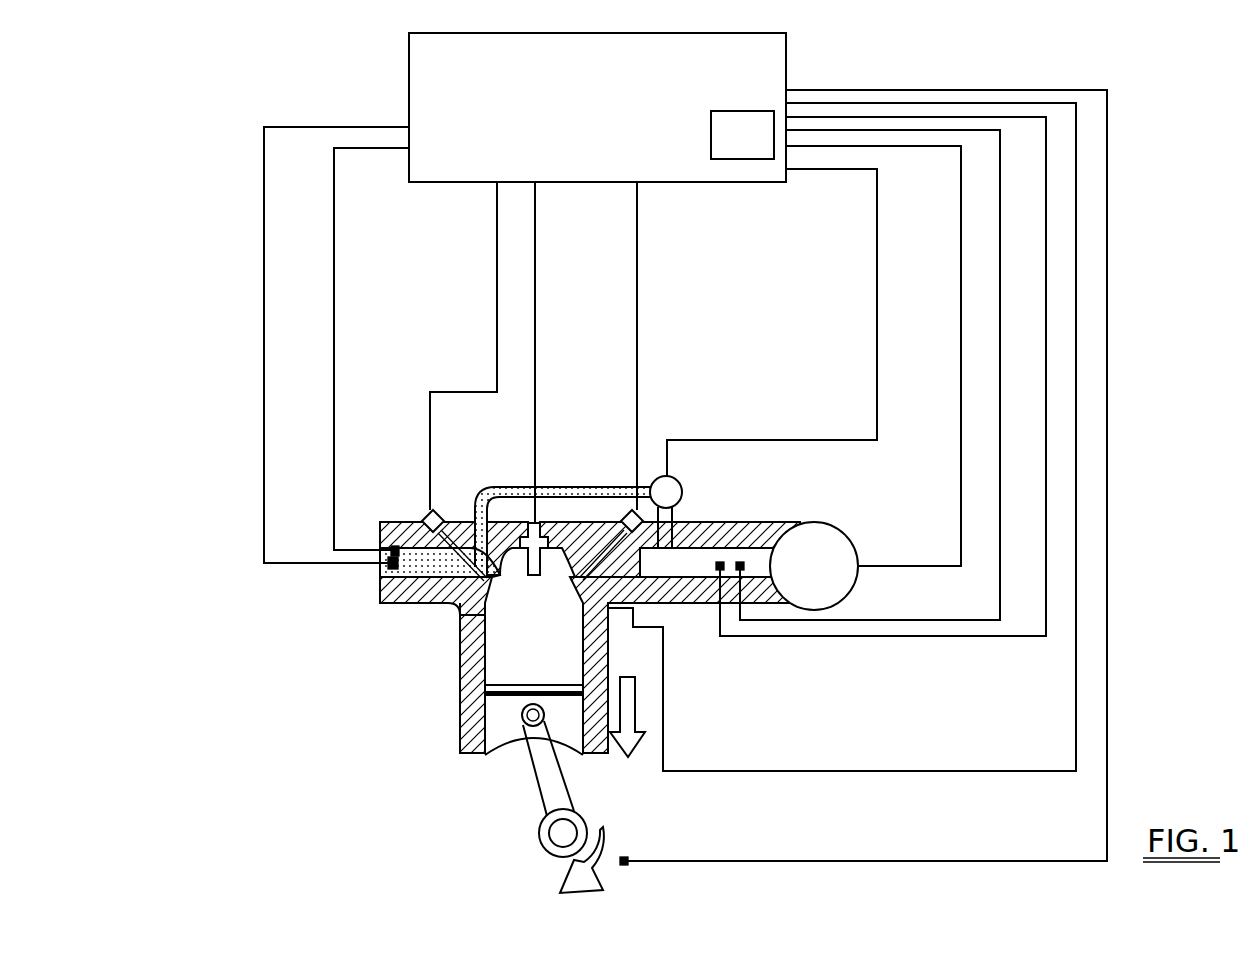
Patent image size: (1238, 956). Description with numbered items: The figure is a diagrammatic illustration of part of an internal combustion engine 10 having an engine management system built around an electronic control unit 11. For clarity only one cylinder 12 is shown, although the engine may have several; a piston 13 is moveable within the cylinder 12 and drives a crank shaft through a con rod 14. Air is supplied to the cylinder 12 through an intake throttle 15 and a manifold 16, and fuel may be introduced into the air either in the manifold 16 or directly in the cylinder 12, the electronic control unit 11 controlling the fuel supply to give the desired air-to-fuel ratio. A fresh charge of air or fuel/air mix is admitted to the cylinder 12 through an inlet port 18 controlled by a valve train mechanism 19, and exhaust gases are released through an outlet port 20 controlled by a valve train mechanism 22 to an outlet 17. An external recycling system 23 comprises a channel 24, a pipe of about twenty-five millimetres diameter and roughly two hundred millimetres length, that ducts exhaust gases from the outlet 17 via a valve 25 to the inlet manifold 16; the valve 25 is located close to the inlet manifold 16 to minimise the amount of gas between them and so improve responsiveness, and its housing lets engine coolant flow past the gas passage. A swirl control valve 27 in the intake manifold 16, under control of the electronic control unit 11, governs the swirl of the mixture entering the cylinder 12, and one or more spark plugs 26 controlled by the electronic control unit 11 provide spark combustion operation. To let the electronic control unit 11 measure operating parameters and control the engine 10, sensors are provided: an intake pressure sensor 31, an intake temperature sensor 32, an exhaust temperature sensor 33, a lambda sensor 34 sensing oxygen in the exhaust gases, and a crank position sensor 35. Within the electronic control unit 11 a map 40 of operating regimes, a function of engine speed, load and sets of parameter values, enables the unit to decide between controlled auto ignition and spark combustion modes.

The engine 10 is at (194, 517).
The electronic control unit 11 is at (772, 58).
The map of operating regimes 40 is at (762, 122).
The cylinder 12 is at (477, 695).
The piston 13 is at (503, 755).
The con rod 14 is at (555, 777).
The intake throttle 15 is at (834, 580).
The manifold 16 is at (668, 645).
The outlet 17 is at (410, 592).
The inlet port 18 is at (595, 640).
The valve train mechanism 19 is at (632, 508).
The outlet port 20 is at (463, 622).
The valve train mechanism 22 is at (430, 508).
The external recycling system 23 is at (595, 488).
The channel 24 is at (527, 528).
The valve 25 is at (658, 477).
The spark plug 26 is at (470, 666).
The swirl control valve 27 is at (703, 522).
The intake pressure sensor 31 is at (717, 573).
The intake temperature sensor 32 is at (743, 573).
The exhaust temperature sensor 33 is at (385, 578).
The lambda sensor 34 is at (383, 540).
The crank position sensor 35 is at (627, 857).